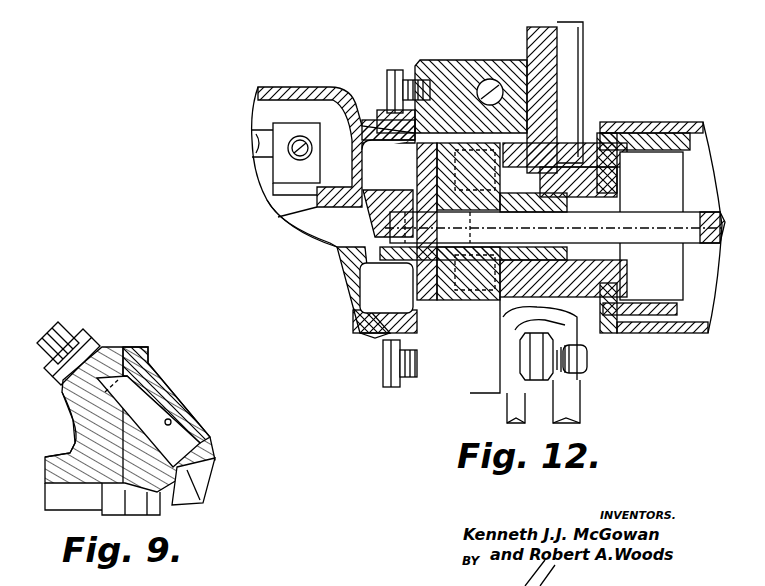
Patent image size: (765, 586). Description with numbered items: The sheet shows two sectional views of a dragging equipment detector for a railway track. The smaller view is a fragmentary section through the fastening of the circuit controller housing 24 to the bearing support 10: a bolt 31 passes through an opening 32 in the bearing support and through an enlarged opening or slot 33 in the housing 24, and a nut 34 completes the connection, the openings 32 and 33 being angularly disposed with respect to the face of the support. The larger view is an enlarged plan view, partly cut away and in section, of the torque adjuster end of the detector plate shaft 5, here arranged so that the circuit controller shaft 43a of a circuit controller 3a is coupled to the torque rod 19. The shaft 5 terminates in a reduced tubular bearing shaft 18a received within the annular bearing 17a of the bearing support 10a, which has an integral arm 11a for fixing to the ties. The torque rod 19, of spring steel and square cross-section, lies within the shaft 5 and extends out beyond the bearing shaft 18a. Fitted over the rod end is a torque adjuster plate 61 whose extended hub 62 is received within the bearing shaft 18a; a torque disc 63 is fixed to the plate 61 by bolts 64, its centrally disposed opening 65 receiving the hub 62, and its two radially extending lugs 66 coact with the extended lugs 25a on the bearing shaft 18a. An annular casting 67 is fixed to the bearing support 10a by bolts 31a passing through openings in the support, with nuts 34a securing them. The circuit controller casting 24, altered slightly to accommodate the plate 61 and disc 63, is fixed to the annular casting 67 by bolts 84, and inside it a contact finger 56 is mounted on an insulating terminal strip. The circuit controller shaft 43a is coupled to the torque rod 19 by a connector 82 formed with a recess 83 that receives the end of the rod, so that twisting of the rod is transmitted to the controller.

In FIG. 12, the circuit controller 3a is at (237, 70).
In FIG. 12, the detector plate shaft 5 is at (678, 122).
In FIG. 9, the bearing support 10 is at (116, 347).
In FIG. 12, the bearing support 10a is at (560, 140).
In FIG. 12, the arm 11a is at (578, 45).
In FIG. 12, the bearing 17a is at (587, 307).
In FIG. 12, the bearing shaft 18a is at (600, 275).
In FIG. 12, the torque rod 19 is at (672, 215).
In FIG. 9, the circuit controller housing 24 is at (160, 380).
In FIG. 12, the circuit controller housing 24 is at (285, 87).
In FIG. 12, the extended lugs 25a is at (437, 170).
In FIG. 9, the bolt 31 is at (203, 472).
In FIG. 12, the bolt 31a is at (491, 79).
In FIG. 9, the opening 32 is at (67, 418).
In FIG. 9, the enlarged opening or slot 33 is at (172, 425).
In FIG. 9, the nut 34 is at (82, 333).
In FIG. 12, the nut 34a is at (540, 360).
In FIG. 12, the circuit controller shaft 43a is at (333, 228).
In FIG. 12, the contact finger 56 is at (258, 180).
In FIG. 12, the torque adjuster plate 61 is at (370, 337).
In FIG. 12, the extended hub 62 is at (557, 208).
In FIG. 12, the torque disc 63 is at (445, 305).
In FIG. 12, the bolt 64 is at (340, 290).
In FIG. 12, the centrally disposed opening 65 is at (363, 318).
In FIG. 12, the lug 66 is at (380, 126).
In FIG. 12, the annular casting 67 is at (440, 60).
In FIG. 12, the connector 82 is at (370, 187).
In FIG. 12, the recess 83 is at (405, 265).
In FIG. 12, the bolt 84 is at (395, 70).